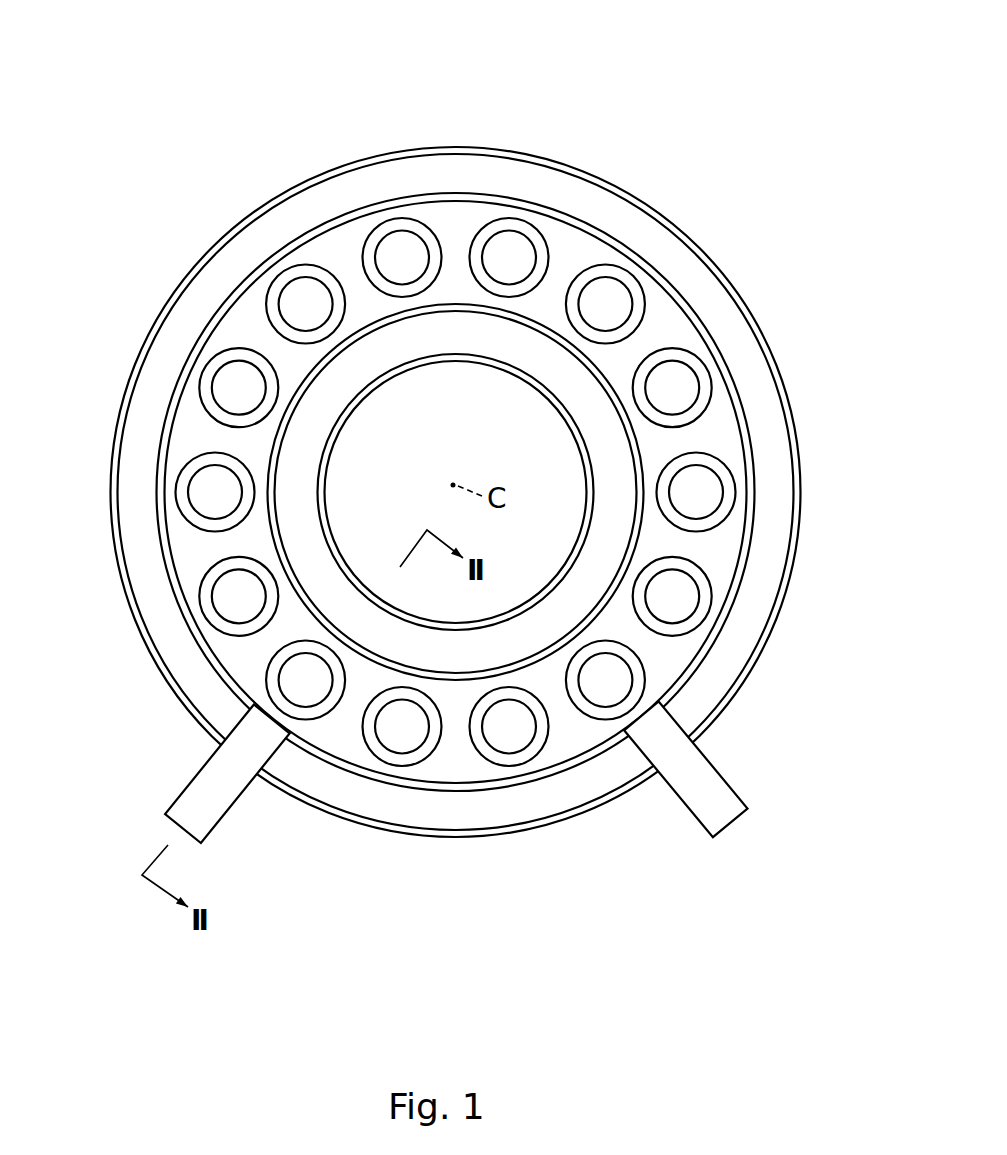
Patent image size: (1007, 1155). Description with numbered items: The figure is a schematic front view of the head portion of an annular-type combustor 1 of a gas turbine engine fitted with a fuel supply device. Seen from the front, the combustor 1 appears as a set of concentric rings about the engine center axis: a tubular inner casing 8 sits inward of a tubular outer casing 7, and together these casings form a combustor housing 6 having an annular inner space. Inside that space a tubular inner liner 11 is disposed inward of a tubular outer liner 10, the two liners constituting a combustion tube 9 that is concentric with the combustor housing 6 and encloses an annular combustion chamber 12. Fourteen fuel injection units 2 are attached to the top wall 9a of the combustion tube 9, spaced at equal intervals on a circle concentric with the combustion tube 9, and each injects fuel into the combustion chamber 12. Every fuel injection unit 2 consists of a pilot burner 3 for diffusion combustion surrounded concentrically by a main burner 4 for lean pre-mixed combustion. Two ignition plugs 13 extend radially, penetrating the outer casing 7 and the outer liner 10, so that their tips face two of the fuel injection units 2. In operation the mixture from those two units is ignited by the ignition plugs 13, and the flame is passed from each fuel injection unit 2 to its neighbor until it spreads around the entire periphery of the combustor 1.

The combustor 1 is at (637, 110).
The fuel injection unit 2 is at (580, 90).
The pilot burner 3 is at (507, 257).
The main burner 4 is at (532, 233).
The combustor housing 6 is at (588, 895).
The outer casing 7 is at (515, 823).
The inner casing 8 is at (525, 610).
The combustion tube 9 is at (345, 873).
The top wall 9a is at (452, 773).
The outer liner 10 is at (355, 775).
The inner liner 11 is at (365, 662).
The combustion chamber 12 is at (702, 447).
The ignition plug 13 is at (188, 780).